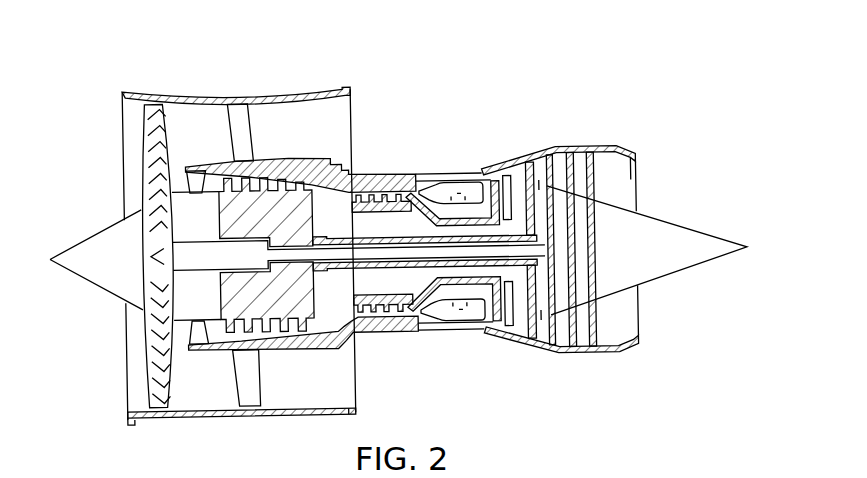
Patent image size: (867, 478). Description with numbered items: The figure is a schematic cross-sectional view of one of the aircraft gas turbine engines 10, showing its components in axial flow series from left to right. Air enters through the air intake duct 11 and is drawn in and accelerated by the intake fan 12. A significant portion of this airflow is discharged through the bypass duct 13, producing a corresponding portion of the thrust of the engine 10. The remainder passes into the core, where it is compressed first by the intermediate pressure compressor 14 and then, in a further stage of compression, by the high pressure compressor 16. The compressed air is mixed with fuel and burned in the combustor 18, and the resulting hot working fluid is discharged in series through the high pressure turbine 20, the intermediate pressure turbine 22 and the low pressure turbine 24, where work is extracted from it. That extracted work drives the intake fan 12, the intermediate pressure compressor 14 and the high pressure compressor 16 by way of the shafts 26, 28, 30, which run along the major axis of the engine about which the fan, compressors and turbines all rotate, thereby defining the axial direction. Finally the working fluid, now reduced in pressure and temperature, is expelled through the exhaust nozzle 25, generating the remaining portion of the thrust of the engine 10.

The engine 10 is at (503, 98).
The air intake duct 11 is at (136, 134).
The intake fan 12 is at (151, 174).
The bypass duct 13 is at (320, 142).
The intermediate pressure compressor 14 is at (226, 166).
The high pressure compressor 16 is at (414, 196).
The combustor 18 is at (459, 192).
The high pressure turbine 20 is at (512, 174).
The intermediate pressure turbine 22 is at (534, 167).
The low pressure turbine 24 is at (596, 156).
The exhaust nozzle 25 is at (633, 194).
The shaft 26 is at (190, 252).
The shaft 28 is at (369, 320).
The shaft 30 is at (476, 294).